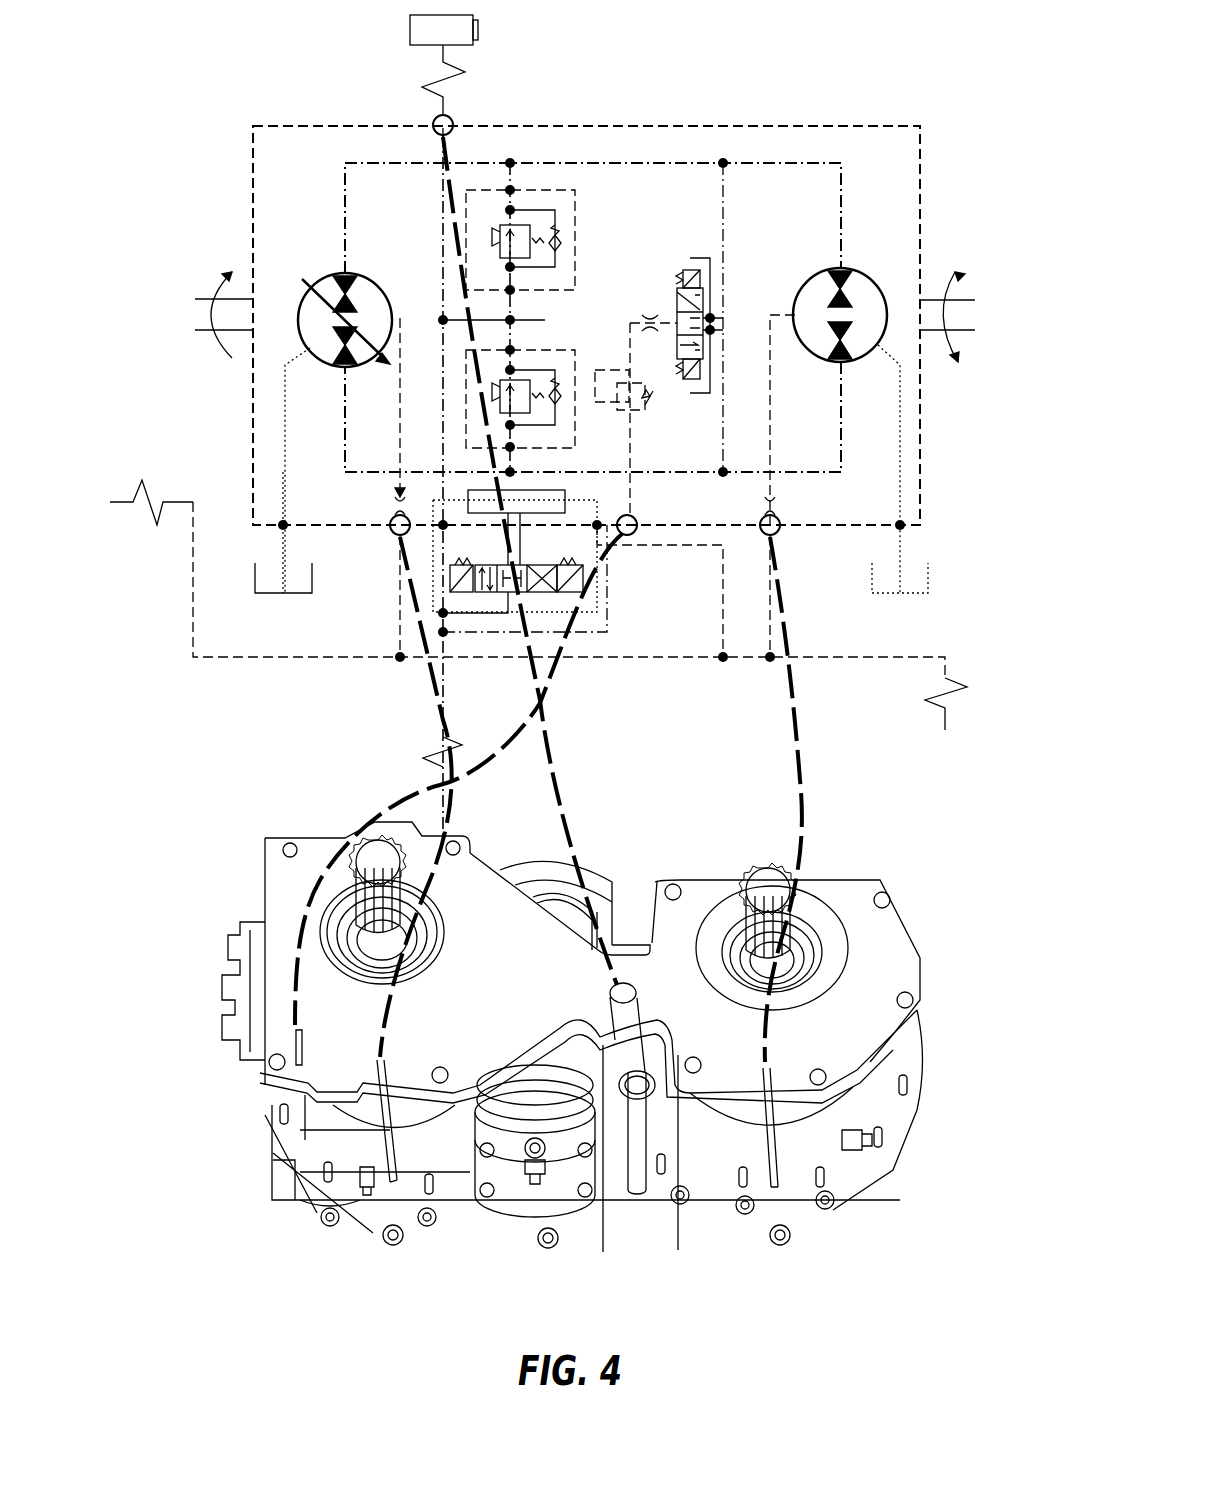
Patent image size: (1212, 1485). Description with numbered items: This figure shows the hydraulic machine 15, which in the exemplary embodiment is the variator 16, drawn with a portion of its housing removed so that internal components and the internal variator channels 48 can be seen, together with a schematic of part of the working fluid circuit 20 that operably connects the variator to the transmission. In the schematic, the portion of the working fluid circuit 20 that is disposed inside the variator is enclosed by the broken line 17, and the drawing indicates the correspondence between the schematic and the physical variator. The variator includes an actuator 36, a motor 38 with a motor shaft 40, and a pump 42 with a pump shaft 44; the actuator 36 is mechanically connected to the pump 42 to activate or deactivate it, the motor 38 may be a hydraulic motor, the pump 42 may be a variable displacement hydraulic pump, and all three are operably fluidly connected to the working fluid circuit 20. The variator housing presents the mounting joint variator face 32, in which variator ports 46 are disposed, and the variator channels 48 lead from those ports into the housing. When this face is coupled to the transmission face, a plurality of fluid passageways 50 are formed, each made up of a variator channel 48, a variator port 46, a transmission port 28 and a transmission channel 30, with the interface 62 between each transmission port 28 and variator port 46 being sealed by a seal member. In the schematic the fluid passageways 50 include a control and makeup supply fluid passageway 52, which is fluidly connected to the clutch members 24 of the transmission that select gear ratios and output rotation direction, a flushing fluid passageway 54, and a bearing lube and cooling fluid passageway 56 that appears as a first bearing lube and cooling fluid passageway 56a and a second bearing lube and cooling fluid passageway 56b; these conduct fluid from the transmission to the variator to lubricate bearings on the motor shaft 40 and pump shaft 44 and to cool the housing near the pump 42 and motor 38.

The hydraulic machine 15 is at (924, 956).
The variator 16 is at (330, 1203).
The broken line 17 is at (922, 192).
The working fluid circuit 20 is at (225, 177).
The clutch members 24 is at (452, 42).
The transmission ports 28 is at (440, 118).
The transmission channels 30 is at (446, 112).
The mounting joint variator face 32 is at (885, 935).
The actuator 36 is at (543, 500).
The motor 38 is at (874, 281).
The motor shaft 40 is at (770, 900).
The pump 42 is at (318, 277).
The pump shaft 44 is at (338, 907).
The variator ports 46 is at (438, 127).
The variator channels 48 is at (305, 1139).
The fluid passageways 50 is at (584, 665).
The control and makeup supply fluid passageway 52 is at (452, 92).
The flushing fluid passageway 54 is at (632, 488).
The bearing lube and cooling fluid passageway 56 is at (400, 409).
The first bearing lube and cooling fluid passageway 56a is at (398, 613).
The second bearing lube and cooling fluid passageway 56b is at (775, 590).
The interface 62 is at (438, 122).